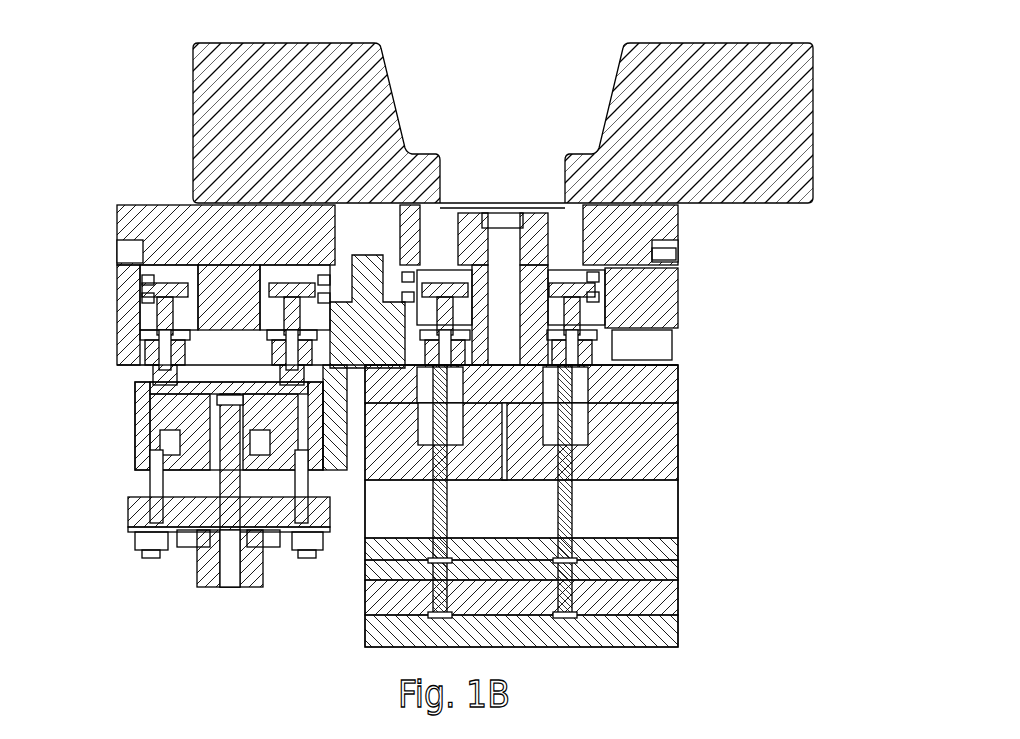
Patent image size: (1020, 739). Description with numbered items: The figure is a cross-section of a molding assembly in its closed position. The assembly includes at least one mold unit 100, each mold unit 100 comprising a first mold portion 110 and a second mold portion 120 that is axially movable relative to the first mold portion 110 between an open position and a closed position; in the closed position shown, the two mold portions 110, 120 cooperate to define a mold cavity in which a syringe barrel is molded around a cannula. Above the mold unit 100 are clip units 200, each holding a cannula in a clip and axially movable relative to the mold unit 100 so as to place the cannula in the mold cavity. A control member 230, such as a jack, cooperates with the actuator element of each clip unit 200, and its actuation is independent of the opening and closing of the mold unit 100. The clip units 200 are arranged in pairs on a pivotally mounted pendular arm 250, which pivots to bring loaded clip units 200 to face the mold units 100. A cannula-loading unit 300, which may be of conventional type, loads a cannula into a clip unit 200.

The mold unit 100 is at (735, 458).
The first mold portion 110 is at (650, 442).
The second mold portion 120 is at (680, 384).
The clip unit 200 is at (418, 350).
The control member 230 is at (142, 266).
The pendular arm 250 is at (362, 340).
The cannula-loading unit 300 is at (125, 408).